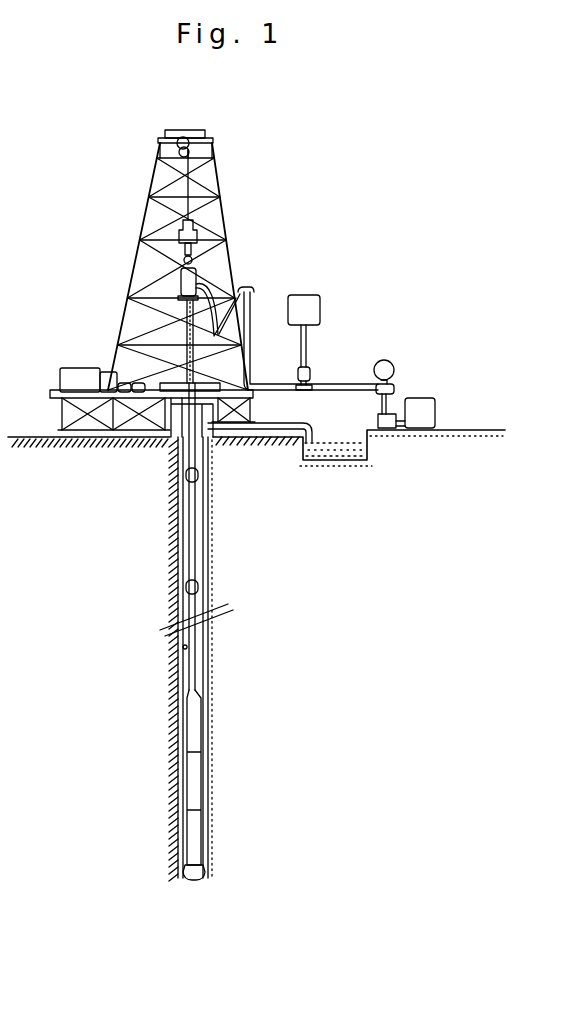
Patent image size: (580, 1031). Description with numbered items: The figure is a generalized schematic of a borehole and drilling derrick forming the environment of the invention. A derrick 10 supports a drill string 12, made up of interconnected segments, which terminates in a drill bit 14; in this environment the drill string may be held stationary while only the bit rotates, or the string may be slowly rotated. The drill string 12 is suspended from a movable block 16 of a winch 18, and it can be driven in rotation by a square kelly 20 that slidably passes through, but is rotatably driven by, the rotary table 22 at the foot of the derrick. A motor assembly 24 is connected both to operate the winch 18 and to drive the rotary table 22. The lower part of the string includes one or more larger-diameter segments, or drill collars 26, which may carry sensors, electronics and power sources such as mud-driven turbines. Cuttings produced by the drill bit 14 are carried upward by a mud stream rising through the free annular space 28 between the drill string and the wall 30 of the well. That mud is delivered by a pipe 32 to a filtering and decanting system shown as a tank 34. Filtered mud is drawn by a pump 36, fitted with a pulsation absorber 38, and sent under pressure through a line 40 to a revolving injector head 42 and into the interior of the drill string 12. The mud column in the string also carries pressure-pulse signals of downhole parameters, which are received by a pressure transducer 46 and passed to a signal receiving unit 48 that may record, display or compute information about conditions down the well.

The derrick 10 is at (138, 297).
The drill string 12 is at (190, 526).
The drill bit 14 is at (197, 130).
The movable block 16 is at (160, 229).
The winch 18 is at (170, 134).
The square kelly 20 is at (187, 365).
The rotary table 22 is at (194, 383).
The motor assembly 24 is at (75, 368).
The drill collar 26 is at (188, 770).
The free annular space 28 is at (205, 641).
The wall of the well 30 is at (183, 647).
The pipe 32 is at (313, 426).
The tank 34 is at (357, 450).
The pump 36 is at (436, 408).
The pulsation absorber 38 is at (390, 361).
The line 40 is at (252, 346).
The revolving injector head 42 is at (178, 273).
The pressure transducer 46 is at (311, 370).
The signal receiving unit 48 is at (303, 295).